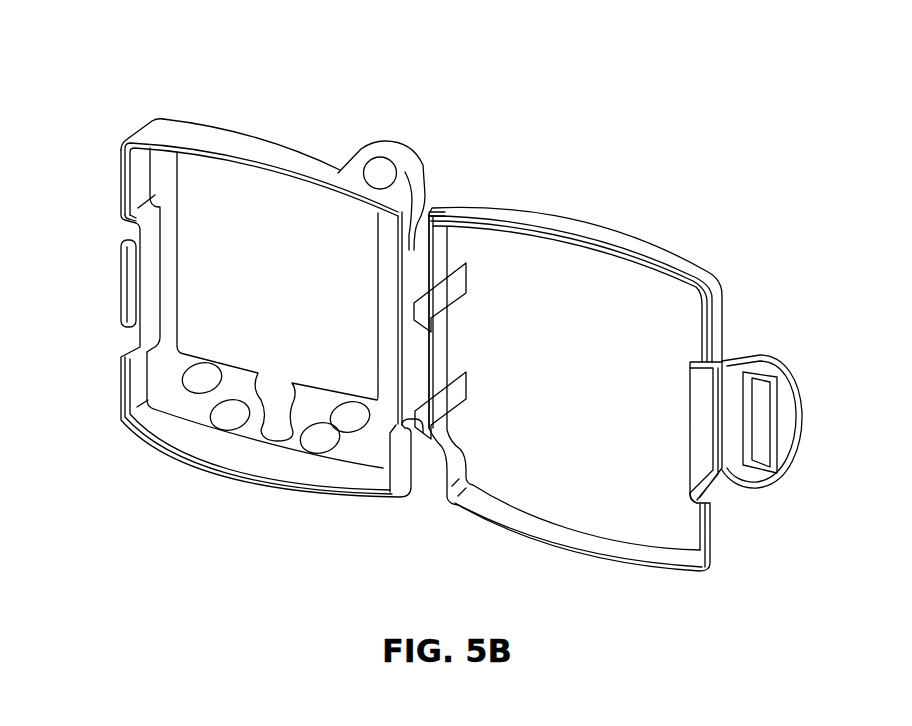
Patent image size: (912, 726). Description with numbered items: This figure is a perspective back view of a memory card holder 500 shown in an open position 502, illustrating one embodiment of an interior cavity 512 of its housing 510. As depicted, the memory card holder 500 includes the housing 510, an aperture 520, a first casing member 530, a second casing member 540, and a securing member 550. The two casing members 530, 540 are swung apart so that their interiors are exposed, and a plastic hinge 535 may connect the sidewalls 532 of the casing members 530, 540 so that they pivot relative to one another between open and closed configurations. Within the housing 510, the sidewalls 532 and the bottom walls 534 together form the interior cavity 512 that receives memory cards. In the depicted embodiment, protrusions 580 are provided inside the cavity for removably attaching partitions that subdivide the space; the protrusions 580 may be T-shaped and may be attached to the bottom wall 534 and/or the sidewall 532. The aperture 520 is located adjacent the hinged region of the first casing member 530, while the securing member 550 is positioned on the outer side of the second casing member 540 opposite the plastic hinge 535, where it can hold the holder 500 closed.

The memory card holder 500 is at (78, 92).
The open position 502 is at (522, 153).
The housing 510 is at (762, 261).
The interior cavity 512 is at (157, 532).
The aperture 520 is at (380, 163).
The first casing member 530 is at (233, 143).
The sidewalls 532 is at (288, 470).
The bottom walls 534 is at (166, 173).
The plastic hinge 535 is at (430, 186).
The second casing member 540 is at (573, 227).
The securing member 550 is at (787, 433).
The protrusions 580 is at (460, 285).